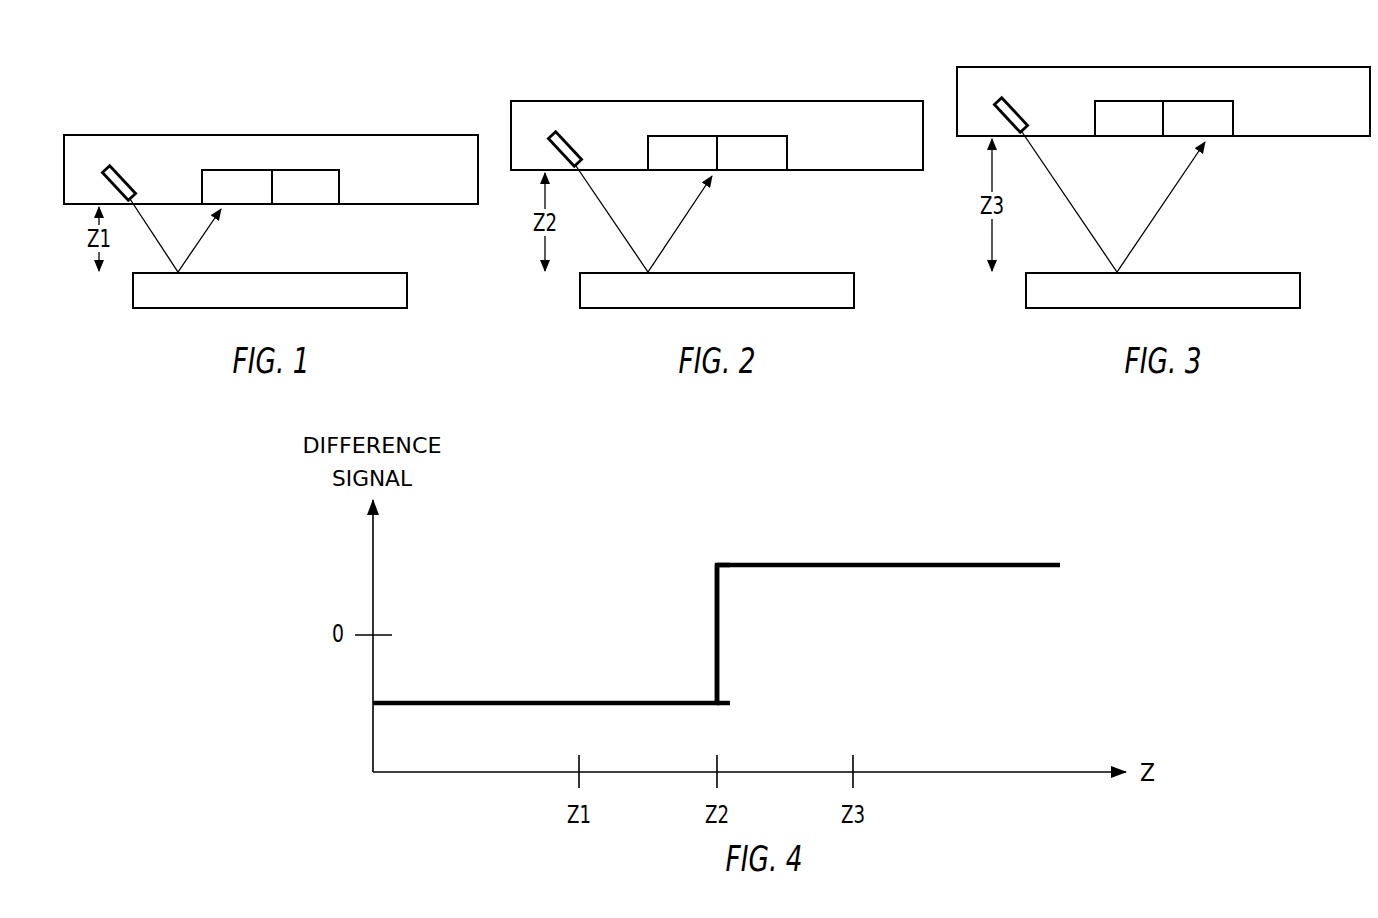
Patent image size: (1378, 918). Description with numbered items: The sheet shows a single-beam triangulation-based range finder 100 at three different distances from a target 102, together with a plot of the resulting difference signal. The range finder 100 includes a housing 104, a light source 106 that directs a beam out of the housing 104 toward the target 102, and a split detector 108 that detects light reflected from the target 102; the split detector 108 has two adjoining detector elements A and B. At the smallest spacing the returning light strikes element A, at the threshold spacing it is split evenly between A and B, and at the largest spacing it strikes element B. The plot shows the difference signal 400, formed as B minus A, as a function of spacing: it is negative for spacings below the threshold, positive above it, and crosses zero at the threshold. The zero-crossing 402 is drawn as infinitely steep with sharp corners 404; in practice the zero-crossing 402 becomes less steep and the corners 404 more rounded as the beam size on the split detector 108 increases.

In FIG. 1, the range finder 100 is at (271, 171).
In FIG. 2, the range finder 100 is at (717, 154).
In FIG. 3, the range finder 100 is at (1163, 137).
In FIG. 1, the target 102 is at (407, 290).
In FIG. 2, the target 102 is at (854, 290).
In FIG. 3, the target 102 is at (1300, 290).
In FIG. 1, the housing 104 is at (272, 135).
In FIG. 2, the housing 104 is at (717, 101).
In FIG. 3, the housing 104 is at (1163, 67).
In FIG. 1, the light source 106 is at (128, 178).
In FIG. 2, the light source 106 is at (575, 145).
In FIG. 3, the light source 106 is at (1020, 110).
In FIG. 1, the split detector 108 is at (273, 170).
In FIG. 2, the split detector 108 is at (718, 136).
In FIG. 3, the split detector 108 is at (1164, 101).
In FIG. 4, the difference signal 400 is at (509, 701).
In FIG. 4, the zero-crossing 402 is at (722, 638).
In FIG. 4, the corners 404 is at (715, 558).